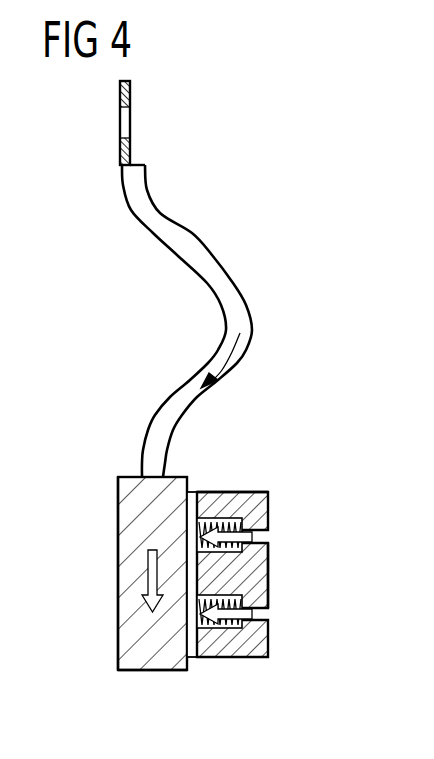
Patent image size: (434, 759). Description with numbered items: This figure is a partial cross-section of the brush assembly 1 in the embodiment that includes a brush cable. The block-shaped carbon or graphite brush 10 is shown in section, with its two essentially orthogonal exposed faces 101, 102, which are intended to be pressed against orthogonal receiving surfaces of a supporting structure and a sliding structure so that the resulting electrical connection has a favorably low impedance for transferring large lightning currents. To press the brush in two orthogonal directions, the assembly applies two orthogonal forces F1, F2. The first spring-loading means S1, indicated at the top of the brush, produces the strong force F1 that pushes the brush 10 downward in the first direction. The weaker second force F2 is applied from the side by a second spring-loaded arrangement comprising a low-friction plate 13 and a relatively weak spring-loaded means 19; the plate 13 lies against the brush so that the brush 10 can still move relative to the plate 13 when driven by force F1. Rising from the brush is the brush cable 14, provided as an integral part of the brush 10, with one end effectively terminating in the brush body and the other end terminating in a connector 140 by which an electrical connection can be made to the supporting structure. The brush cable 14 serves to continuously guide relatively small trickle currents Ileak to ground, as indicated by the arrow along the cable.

The brush assembly 1 is at (325, 290).
The connector 140 is at (131, 101).
The brush cable 14 is at (207, 250).
The trickle currents Ileak is at (233, 363).
The brush 10 is at (188, 478).
The face of the brush 102 is at (118, 527).
The face of the brush 101 is at (160, 672).
The first force F1 is at (148, 578).
The low-friction plate 13 is at (192, 657).
The spring-loaded means 19 is at (245, 509).
The first spring-loading means S1 is at (253, 491).
The second force F2 is at (268, 548).